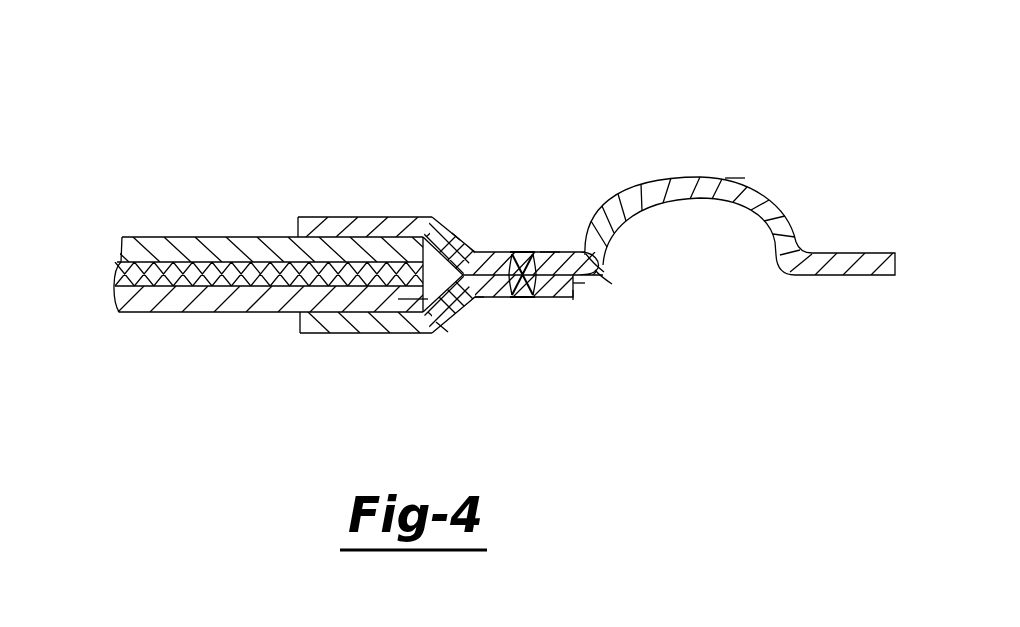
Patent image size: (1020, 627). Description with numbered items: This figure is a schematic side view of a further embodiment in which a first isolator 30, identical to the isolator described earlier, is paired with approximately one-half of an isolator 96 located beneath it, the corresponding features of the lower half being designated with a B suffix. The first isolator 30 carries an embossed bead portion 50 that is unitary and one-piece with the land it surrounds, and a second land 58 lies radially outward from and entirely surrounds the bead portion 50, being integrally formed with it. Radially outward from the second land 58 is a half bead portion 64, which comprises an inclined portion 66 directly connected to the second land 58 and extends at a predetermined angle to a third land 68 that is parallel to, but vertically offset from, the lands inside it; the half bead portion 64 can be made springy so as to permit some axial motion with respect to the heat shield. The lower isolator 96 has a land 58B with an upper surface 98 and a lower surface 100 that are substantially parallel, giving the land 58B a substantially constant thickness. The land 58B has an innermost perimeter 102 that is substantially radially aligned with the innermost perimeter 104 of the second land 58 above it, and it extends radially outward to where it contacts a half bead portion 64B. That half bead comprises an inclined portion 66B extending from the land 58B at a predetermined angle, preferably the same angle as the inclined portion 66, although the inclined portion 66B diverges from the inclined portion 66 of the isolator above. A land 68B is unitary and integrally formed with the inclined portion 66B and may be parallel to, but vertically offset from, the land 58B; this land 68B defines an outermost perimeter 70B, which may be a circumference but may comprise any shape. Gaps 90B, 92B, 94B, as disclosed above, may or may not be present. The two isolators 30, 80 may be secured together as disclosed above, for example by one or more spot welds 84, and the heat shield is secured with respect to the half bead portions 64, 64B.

The first isolator 30 is at (737, 163).
The embossed bead portion 50 is at (643, 187).
The second land 58 is at (558, 252).
The land 58B is at (552, 297).
The half bead portion 64 is at (410, 217).
The half bead portion 64B is at (440, 297).
The inclined portion 66 is at (455, 235).
The inclined portion 66B is at (477, 297).
The third land 68 is at (323, 217).
The land 68B is at (306, 335).
The outermost perimeter 70B is at (300, 325).
The isolator 80 is at (544, 127).
The spot welds 84 is at (530, 252).
The gap 90B is at (285, 237).
The gap 92B is at (398, 300).
The gap 94B is at (297, 317).
The isolator 96 is at (450, 345).
The upper surface 98 is at (597, 270).
The lower surface 100 is at (572, 297).
The innermost perimeter 102 is at (577, 283).
The innermost perimeter 104 is at (613, 262).